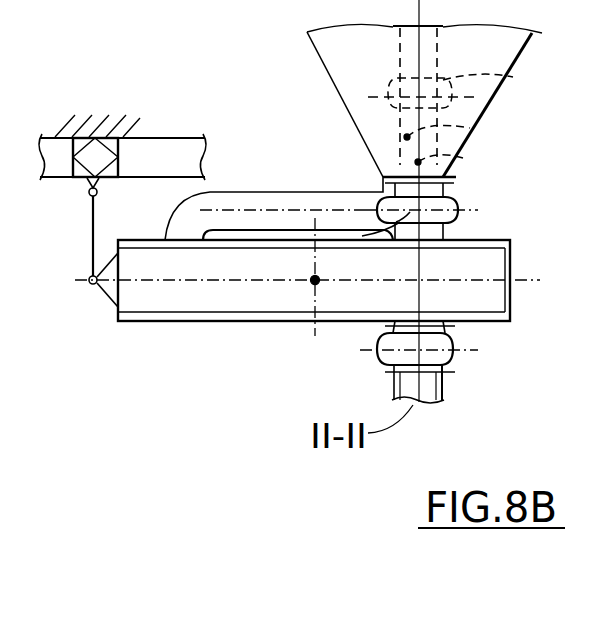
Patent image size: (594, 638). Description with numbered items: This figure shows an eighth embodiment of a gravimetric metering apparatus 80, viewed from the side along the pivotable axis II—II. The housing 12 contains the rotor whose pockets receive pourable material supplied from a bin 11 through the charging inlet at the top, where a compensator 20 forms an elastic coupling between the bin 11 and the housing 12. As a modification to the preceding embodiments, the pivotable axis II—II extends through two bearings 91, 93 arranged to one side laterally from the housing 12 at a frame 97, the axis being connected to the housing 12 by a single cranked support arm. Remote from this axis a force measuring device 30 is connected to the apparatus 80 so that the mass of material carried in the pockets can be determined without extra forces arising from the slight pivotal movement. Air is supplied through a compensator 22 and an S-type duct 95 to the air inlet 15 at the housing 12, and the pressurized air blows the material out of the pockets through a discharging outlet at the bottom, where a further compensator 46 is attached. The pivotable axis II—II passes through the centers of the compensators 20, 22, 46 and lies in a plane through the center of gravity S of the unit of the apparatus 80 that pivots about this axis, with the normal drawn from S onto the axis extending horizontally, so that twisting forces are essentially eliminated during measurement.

The bin 11 is at (330, 72).
The compensator 22 is at (513, 77).
The bearing 93 is at (470, 128).
The bearing 91 is at (463, 158).
The compensator 20 is at (460, 203).
The S-type duct 95 is at (293, 197).
The air inlet 15 is at (195, 232).
The housing 12 is at (256, 314).
The force measuring device 30 is at (110, 142).
The frame 97 is at (168, 150).
The compensator 46 is at (380, 362).
The metering apparatus 80 is at (62, 318).